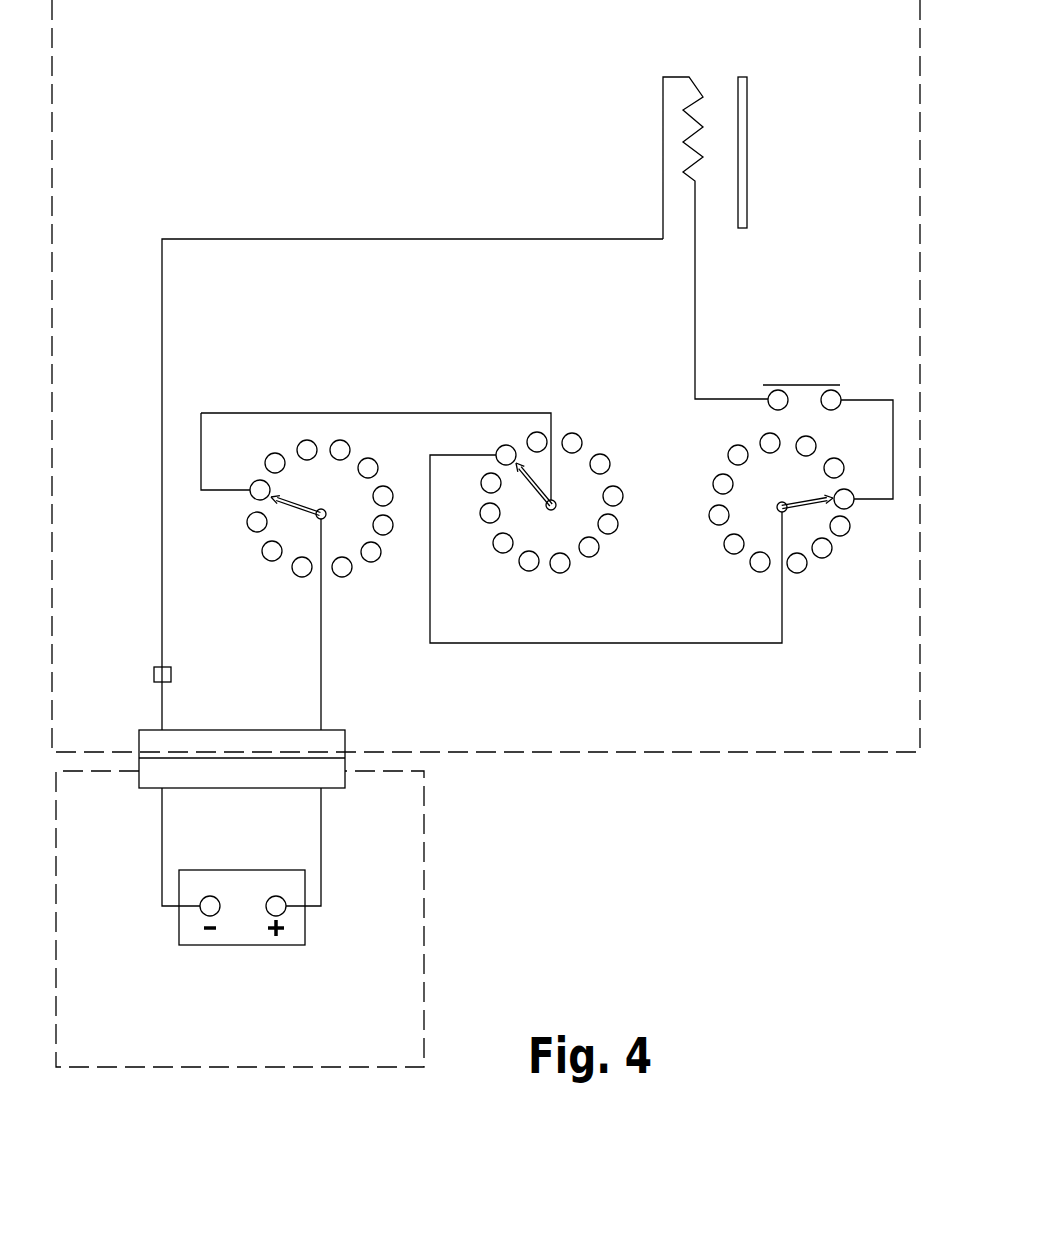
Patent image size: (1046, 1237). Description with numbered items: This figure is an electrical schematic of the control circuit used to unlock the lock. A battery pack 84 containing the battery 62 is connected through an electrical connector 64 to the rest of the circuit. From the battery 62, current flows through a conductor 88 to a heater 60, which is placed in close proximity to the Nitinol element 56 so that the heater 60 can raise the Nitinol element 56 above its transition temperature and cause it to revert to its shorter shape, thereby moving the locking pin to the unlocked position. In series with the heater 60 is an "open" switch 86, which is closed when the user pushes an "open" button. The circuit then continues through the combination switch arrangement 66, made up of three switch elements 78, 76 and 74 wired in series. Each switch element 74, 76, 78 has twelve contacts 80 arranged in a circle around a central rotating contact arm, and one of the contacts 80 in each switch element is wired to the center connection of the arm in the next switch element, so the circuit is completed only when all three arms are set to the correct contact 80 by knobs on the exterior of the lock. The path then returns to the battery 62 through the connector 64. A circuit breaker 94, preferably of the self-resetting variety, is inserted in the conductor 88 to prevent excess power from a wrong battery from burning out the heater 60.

The Nitinol element 56 is at (742, 110).
The heater 60 is at (704, 112).
The battery 62 is at (242, 927).
The electrical connector 64 is at (344, 738).
The combination switch arrangement 66 is at (534, 675).
The switch element 74 is at (306, 639).
The switch element 76 is at (518, 430).
The switch element 78 is at (700, 476).
The contacts 80 is at (371, 552).
The battery pack 84 is at (424, 892).
The open switch 86 is at (798, 385).
The conductor 88 is at (162, 497).
The circuit breaker 94 is at (171, 674).